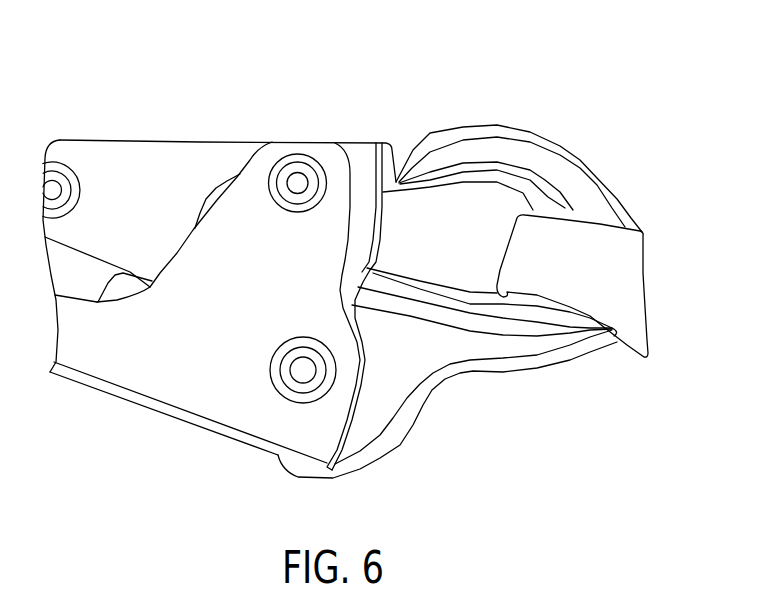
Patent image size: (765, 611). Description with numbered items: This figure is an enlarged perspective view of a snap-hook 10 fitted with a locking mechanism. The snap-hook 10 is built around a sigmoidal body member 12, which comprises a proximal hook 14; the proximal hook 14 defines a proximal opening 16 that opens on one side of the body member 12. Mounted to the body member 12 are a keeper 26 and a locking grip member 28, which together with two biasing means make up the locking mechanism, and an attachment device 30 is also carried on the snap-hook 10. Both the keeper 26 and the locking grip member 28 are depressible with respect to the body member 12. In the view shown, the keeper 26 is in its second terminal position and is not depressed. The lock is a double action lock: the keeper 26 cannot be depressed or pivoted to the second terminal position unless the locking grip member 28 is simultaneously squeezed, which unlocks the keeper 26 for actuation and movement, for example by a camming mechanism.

The snap-hook 10 is at (479, 90).
The sigmoidal body member 12 is at (531, 352).
The proximal hook 14 is at (588, 192).
The proximal opening 16 is at (432, 224).
The keeper 26 is at (152, 387).
The locking grip member 28 is at (206, 152).
The attachment device 30 is at (628, 291).